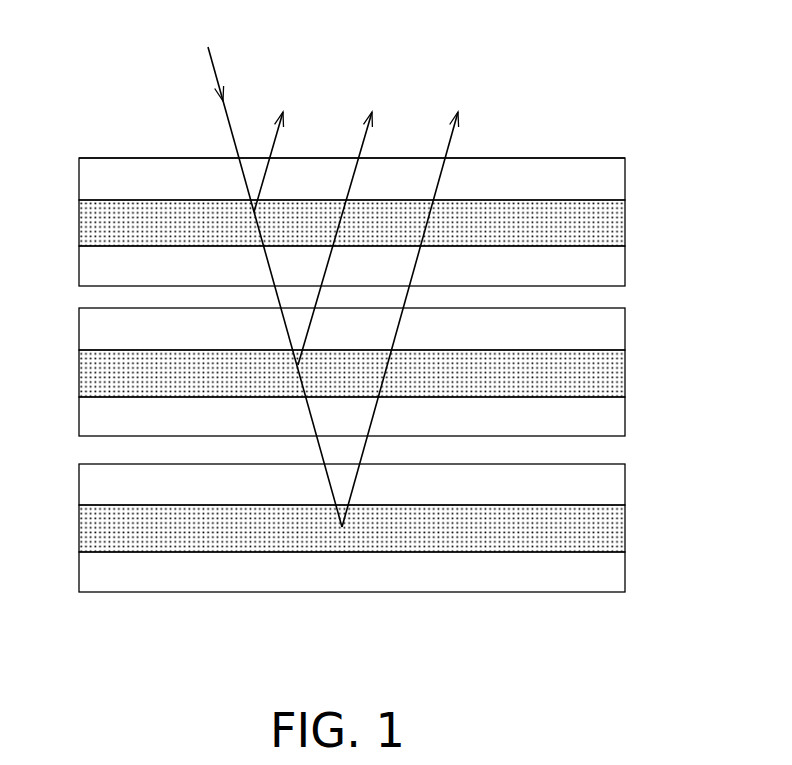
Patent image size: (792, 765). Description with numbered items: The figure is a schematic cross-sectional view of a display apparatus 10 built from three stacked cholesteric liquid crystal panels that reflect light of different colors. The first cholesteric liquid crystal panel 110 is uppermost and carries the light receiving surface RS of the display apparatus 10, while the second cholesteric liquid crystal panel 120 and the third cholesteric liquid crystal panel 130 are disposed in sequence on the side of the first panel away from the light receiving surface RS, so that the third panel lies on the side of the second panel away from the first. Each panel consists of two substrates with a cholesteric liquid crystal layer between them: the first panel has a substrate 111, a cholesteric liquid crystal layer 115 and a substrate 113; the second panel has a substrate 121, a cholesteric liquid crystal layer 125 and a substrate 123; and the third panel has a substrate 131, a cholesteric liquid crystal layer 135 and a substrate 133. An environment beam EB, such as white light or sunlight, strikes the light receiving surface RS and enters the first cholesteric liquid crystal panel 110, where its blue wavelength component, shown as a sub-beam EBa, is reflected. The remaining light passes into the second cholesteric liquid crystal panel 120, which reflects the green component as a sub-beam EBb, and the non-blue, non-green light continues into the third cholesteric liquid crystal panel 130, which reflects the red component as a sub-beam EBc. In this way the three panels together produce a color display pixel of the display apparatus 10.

The display apparatus 10 is at (727, 672).
The first cholesteric liquid crystal panel 110 is at (414, 220).
The substrate 111 is at (625, 182).
The cholesteric liquid crystal layer 115 is at (620, 224).
The substrate 113 is at (385, 265).
The second cholesteric liquid crystal panel 120 is at (415, 370).
The substrate 121 is at (625, 332).
The cholesteric liquid crystal layer 125 is at (620, 374).
The substrate 123 is at (386, 415).
The third cholesteric liquid crystal panel 130 is at (415, 527).
The substrate 131 is at (625, 489).
The cholesteric liquid crystal layer 135 is at (620, 530).
The substrate 133 is at (386, 572).
The light receiving surface RS is at (94, 155).
The environment beam EB is at (217, 73).
The sub-beam EBa is at (281, 143).
The sub-beam EBb is at (366, 143).
The sub-beam EBc is at (453, 143).